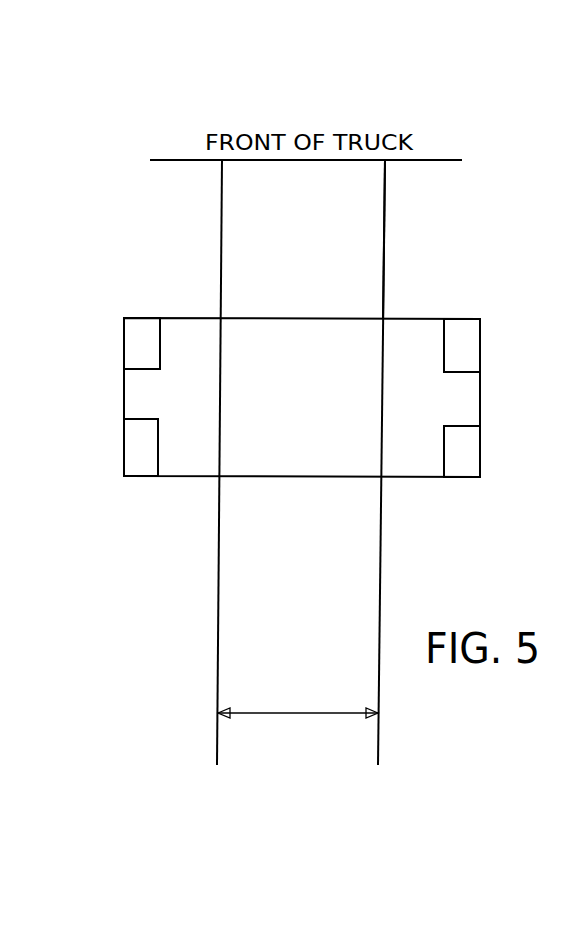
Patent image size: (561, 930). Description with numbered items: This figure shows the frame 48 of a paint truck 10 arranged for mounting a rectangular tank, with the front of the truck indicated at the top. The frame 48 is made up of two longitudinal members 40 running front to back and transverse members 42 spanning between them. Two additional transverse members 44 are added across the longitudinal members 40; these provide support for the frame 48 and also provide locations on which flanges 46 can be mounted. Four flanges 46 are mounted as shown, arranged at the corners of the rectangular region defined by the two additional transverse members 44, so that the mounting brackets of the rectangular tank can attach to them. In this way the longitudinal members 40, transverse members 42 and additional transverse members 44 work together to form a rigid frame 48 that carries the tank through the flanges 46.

The paint truck 10 is at (240, 123).
The longitudinal members 40 is at (222, 218).
The transverse members 42 is at (325, 160).
The additional transverse members 44 is at (303, 318).
The flanges 46 is at (124, 345).
The frame 48 is at (405, 237).